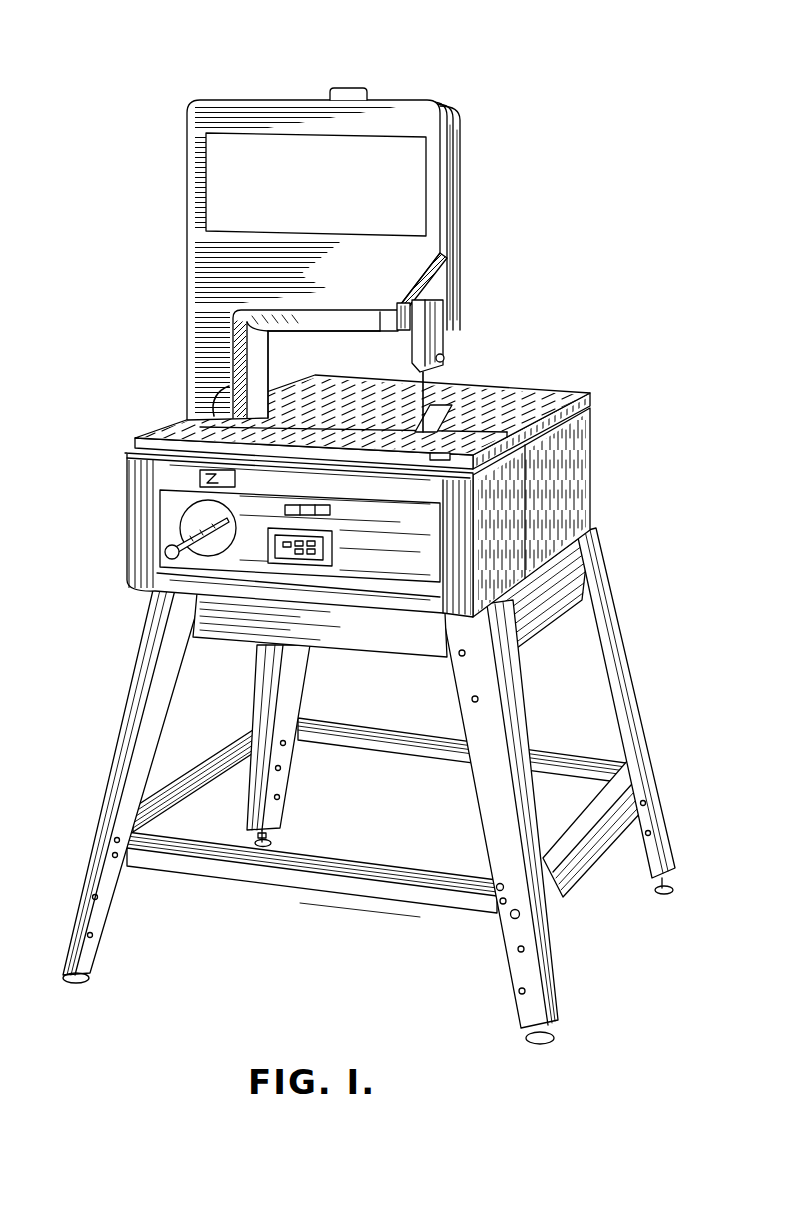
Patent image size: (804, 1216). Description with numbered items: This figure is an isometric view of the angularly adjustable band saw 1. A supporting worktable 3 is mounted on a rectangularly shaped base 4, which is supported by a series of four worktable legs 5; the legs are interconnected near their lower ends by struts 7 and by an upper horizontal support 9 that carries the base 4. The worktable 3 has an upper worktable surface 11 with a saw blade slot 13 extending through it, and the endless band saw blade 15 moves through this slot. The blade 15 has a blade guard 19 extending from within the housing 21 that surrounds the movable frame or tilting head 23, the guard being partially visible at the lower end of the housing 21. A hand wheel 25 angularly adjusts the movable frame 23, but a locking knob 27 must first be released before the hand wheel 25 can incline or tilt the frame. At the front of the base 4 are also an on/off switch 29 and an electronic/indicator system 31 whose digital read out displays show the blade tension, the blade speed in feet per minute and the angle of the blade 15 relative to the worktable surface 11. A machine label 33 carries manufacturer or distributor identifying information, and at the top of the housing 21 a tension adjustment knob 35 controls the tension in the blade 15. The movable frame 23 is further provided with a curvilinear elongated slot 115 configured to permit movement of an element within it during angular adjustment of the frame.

The angularly adjustable band saw 1 is at (576, 226).
The supporting worktable 3 is at (397, 405).
The base 4 is at (558, 455).
The worktable legs 5 is at (135, 760).
The struts 7 is at (430, 752).
The upper horizontal support 9 is at (218, 617).
The upper worktable surface 11 is at (487, 413).
The saw blade slot 13 is at (450, 402).
The endless band saw blade 15 is at (425, 428).
The blade guard 19 is at (438, 323).
The housing 21 is at (295, 216).
The movable frame 23 is at (305, 322).
The hand wheel 25 is at (190, 521).
The locking knob 27 is at (200, 478).
The on/off switch 29 is at (332, 510).
The electronic/indicator system 31 is at (325, 563).
The machine label 33 is at (224, 163).
The tension adjustment knob 35 is at (342, 88).
The curvilinear elongated slot 115 is at (227, 392).